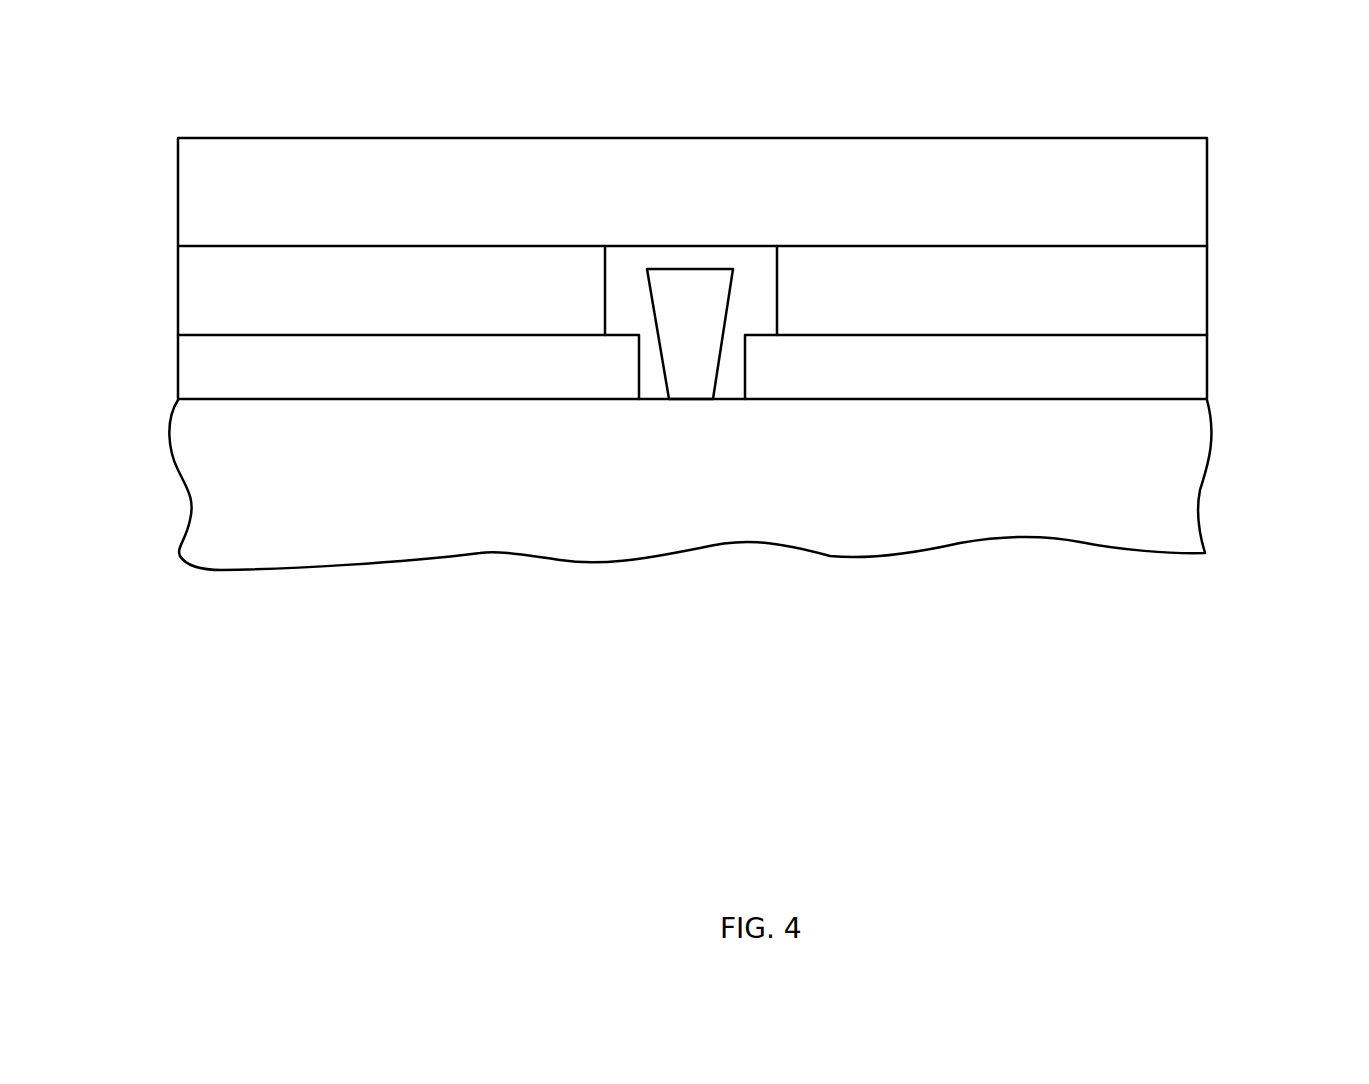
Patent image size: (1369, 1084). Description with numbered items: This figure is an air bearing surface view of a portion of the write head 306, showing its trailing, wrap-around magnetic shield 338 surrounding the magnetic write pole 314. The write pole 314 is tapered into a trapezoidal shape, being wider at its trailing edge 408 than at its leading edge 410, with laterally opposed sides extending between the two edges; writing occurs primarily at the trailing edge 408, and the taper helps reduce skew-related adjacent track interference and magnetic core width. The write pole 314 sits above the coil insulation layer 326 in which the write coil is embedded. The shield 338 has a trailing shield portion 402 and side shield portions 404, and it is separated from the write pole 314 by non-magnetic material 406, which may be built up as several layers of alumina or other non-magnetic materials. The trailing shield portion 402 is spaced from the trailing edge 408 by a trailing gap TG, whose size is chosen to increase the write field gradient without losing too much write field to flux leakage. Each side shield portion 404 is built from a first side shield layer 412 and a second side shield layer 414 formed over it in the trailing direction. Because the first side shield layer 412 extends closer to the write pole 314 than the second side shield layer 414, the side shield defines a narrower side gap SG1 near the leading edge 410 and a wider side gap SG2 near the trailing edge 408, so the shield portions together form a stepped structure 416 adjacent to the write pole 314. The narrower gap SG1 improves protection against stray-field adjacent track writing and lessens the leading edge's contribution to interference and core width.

The write head 306 is at (776, 122).
The wrap-around magnetic shield 338 is at (1222, 400).
The trailing shield portion 402 is at (736, 161).
The side shield portion 404 is at (155, 400).
The second side shield layer 414 is at (354, 290).
The first side shield layer 412 is at (345, 369).
The write pole 314 is at (721, 290).
The coil insulation layer 326 is at (742, 477).
The trailing edge 408 is at (692, 268).
The leading edge 410 is at (693, 400).
The non-magnetic material 406 is at (758, 285).
The stepped structure 416 is at (758, 335).
The trailing gap TG is at (627, 310).
The first side gap SG1 is at (673, 379).
The second side gap SG2 is at (678, 215).